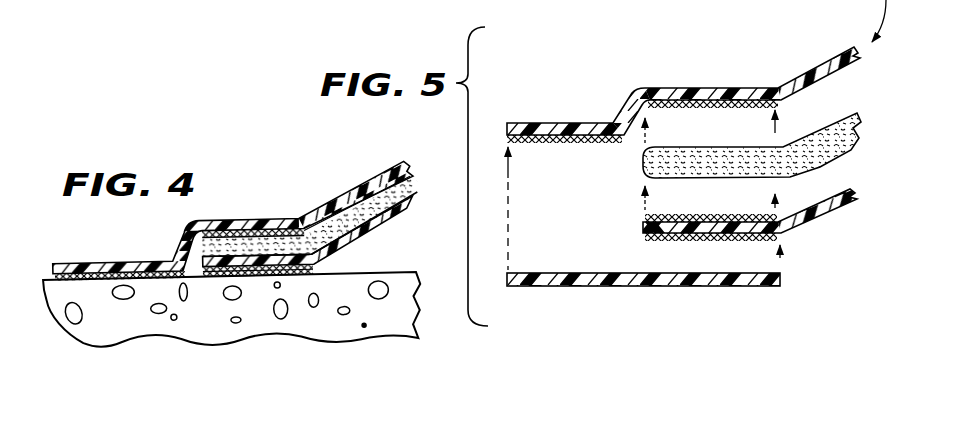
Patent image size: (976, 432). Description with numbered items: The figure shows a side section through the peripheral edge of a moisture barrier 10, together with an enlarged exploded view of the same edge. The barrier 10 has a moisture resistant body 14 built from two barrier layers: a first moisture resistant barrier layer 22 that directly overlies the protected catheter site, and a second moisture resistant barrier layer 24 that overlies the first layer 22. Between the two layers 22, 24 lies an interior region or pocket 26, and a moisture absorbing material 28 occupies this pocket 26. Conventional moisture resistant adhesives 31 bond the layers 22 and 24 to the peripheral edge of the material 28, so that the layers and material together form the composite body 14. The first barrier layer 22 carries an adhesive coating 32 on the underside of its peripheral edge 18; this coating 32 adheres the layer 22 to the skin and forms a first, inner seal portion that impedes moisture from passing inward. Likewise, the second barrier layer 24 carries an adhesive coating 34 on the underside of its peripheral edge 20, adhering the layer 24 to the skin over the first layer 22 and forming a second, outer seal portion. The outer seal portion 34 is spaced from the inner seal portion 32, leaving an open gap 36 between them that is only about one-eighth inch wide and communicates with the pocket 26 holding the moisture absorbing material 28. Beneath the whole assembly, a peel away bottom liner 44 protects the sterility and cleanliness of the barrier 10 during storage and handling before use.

In FIG. 4, the moisture barrier 10 is at (240, 251).
In FIG. 4, the moisture resistant body 14 is at (229, 258).
In FIG. 4, the peripheral edge of first barrier layer 18 is at (282, 268).
In FIG. 5, the peripheral edge of first barrier layer 18 is at (643, 227).
In FIG. 4, the peripheral edge of second barrier layer 20 is at (147, 276).
In FIG. 5, the peripheral edge of second barrier layer 20 is at (578, 138).
In FIG. 4, the first moisture resistant barrier layer 22 is at (380, 222).
In FIG. 5, the first moisture resistant barrier layer 22 is at (840, 196).
In FIG. 4, the second moisture resistant barrier layer 24 is at (343, 195).
In FIG. 5, the second moisture resistant barrier layer 24 is at (813, 62).
In FIG. 4, the interior region or pocket 26 is at (311, 192).
In FIG. 5, the interior region or pocket 26 is at (767, 124).
In FIG. 4, the moisture absorbing material 28 is at (223, 245).
In FIG. 5, the moisture absorbing material 28 is at (838, 162).
In FIG. 4, the moisture resistant adhesive 31 is at (260, 230).
In FIG. 5, the moisture resistant adhesive 31 is at (690, 107).
In FIG. 4, the adhesive coating 32 is at (223, 268).
In FIG. 5, the adhesive coating 32 is at (678, 240).
In FIG. 4, the adhesive coating 34 is at (90, 280).
In FIG. 5, the adhesive coating 34 is at (540, 142).
In FIG. 4, the open gap 36 is at (182, 263).
In FIG. 5, the open gap 36 is at (630, 140).
In FIG. 5, the peel away bottom liner 44 is at (750, 284).